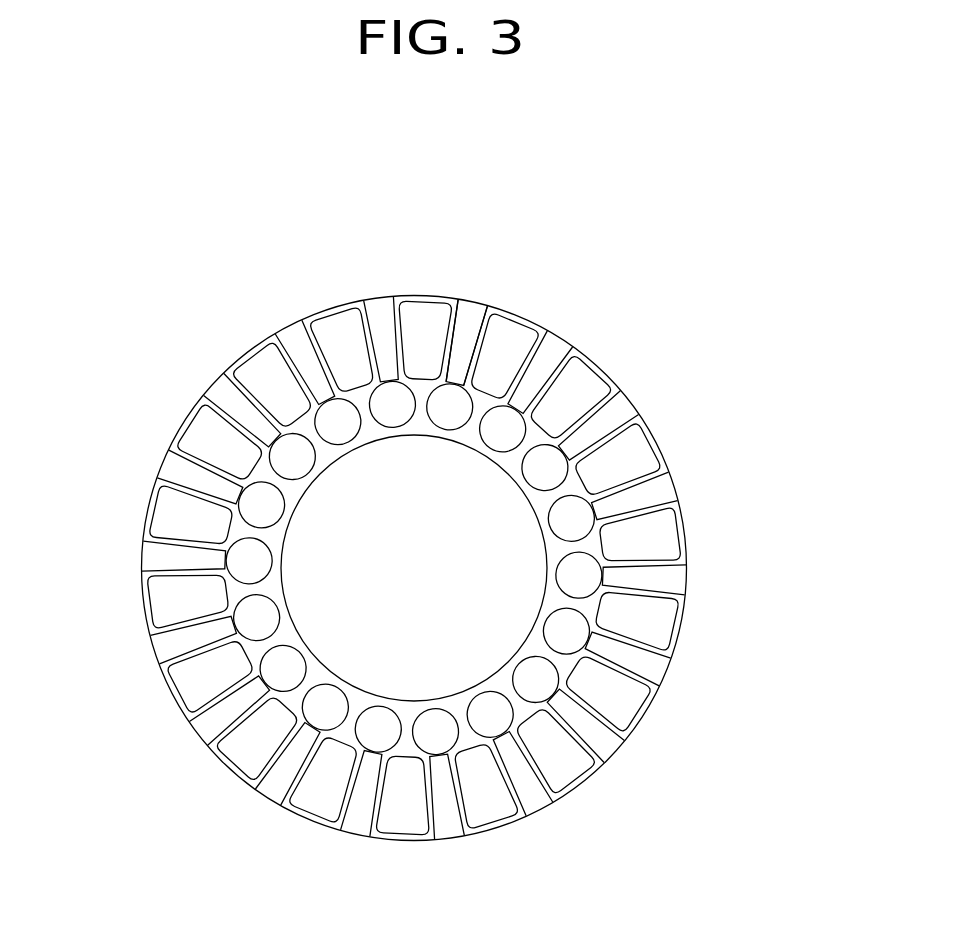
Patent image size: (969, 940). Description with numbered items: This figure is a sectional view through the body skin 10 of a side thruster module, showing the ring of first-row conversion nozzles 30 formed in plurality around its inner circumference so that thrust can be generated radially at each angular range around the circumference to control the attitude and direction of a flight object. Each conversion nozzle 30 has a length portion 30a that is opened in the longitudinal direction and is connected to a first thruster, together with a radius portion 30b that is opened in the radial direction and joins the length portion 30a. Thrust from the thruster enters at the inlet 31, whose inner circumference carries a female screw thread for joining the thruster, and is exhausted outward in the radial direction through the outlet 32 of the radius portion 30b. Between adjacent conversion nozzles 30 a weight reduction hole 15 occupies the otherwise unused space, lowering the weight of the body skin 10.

The body skin 10 is at (136, 555).
The weight reduction hole 15 is at (266, 382).
The first-row conversion nozzle 30 is at (474, 291).
The length portion 30a is at (446, 400).
The radius portion 30b is at (457, 343).
The inlet 31 is at (474, 372).
The outlet 32 is at (463, 383).